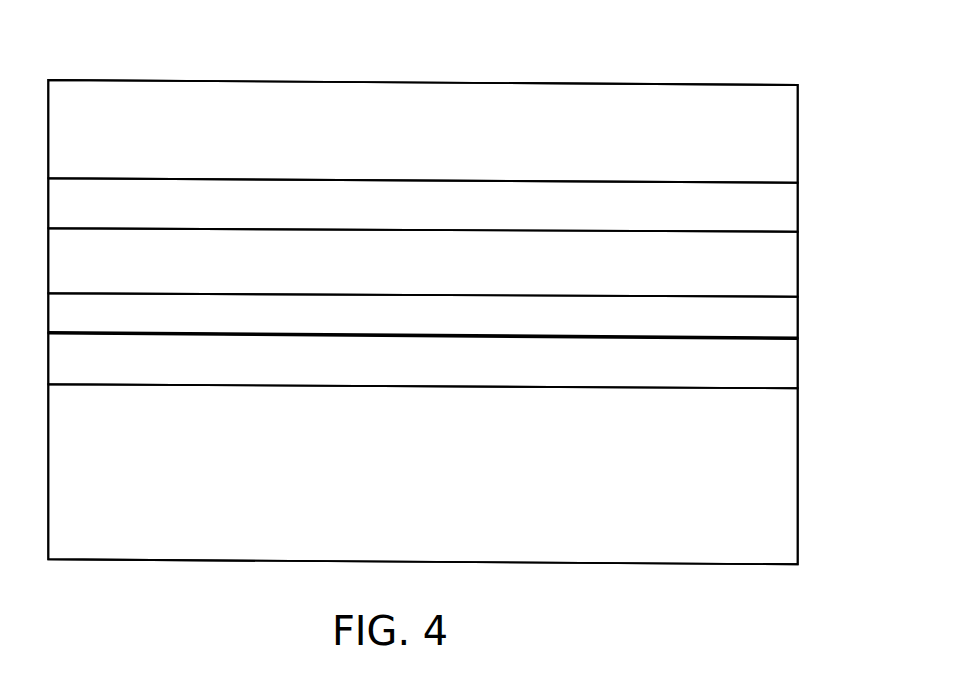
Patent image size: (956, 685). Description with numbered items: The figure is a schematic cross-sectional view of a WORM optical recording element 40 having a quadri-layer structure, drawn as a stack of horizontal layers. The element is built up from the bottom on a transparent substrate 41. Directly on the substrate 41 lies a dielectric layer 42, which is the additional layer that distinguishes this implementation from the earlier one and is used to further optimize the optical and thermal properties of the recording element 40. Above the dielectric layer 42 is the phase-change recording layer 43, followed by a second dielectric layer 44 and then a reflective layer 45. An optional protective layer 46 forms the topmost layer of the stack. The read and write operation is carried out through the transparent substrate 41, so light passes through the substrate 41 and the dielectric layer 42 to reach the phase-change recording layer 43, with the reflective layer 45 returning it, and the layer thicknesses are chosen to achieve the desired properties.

The recording element 40 is at (422, 282).
The substrate 41 is at (463, 474).
The dielectric layer 42 is at (463, 358).
The phase-change recording layer 43 is at (463, 309).
The second dielectric layer 44 is at (463, 262).
The reflective layer 45 is at (463, 204).
The protective layer 46 is at (463, 131).